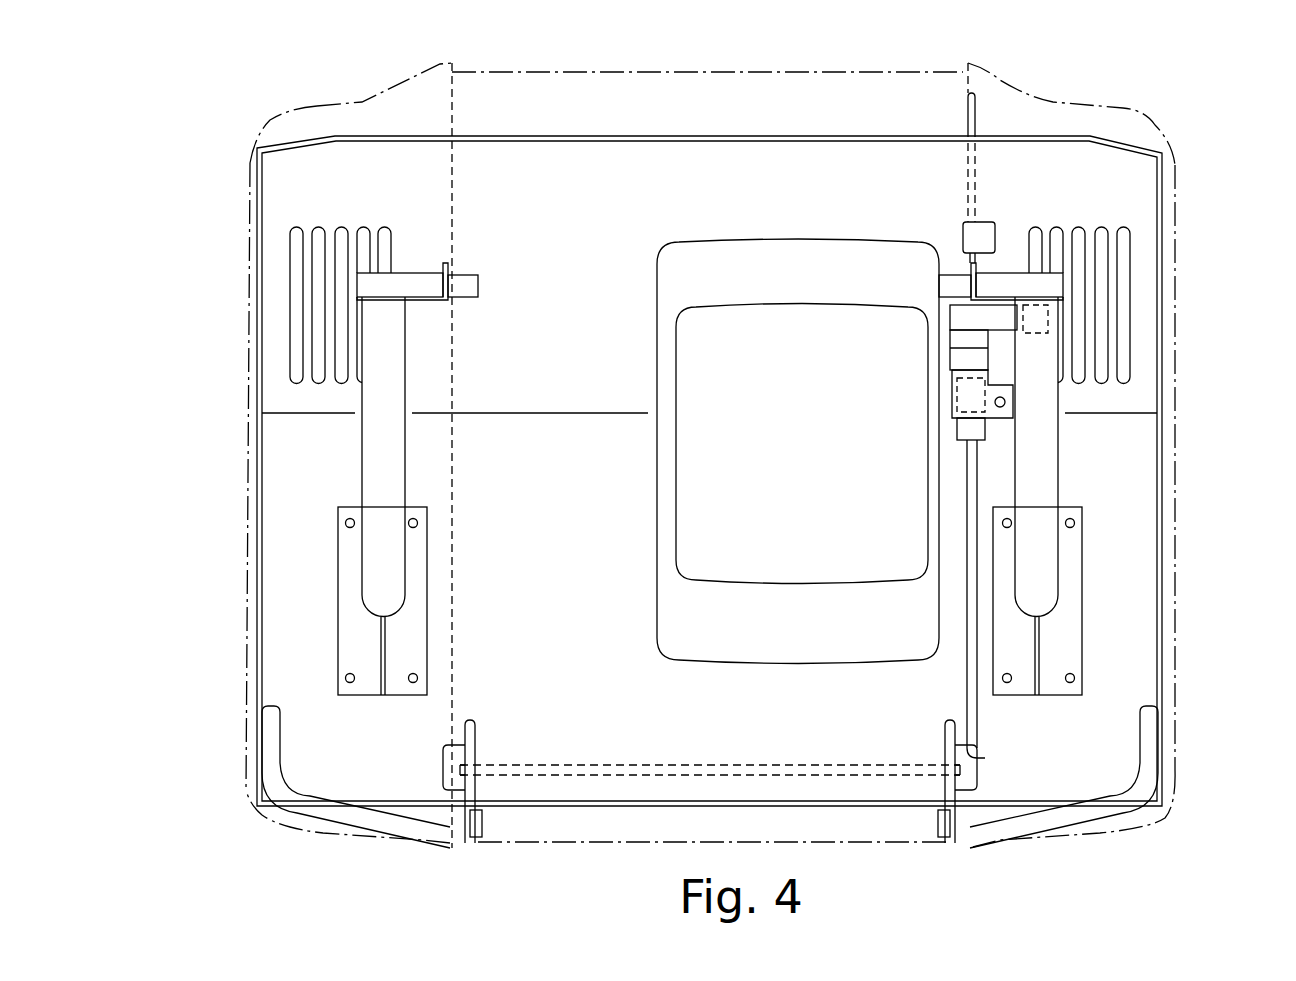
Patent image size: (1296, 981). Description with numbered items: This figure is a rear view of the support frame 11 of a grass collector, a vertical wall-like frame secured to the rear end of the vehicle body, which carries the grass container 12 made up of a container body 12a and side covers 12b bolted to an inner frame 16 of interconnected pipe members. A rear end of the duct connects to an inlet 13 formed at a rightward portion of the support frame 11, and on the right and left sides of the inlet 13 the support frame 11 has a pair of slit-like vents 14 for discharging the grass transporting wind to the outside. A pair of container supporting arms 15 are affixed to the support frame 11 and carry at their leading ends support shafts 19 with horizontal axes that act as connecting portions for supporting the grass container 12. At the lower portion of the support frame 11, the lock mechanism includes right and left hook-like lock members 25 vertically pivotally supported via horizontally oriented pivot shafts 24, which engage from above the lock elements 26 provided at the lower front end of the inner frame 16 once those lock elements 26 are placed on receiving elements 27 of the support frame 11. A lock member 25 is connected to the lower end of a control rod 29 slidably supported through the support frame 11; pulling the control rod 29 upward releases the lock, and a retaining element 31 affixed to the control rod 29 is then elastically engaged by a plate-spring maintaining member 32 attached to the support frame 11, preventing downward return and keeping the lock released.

The support frame 11 is at (295, 138).
The grass container 12 is at (1178, 148).
The container body 12a is at (655, 70).
The side covers 12b is at (240, 340).
The inlet 13 is at (797, 335).
The slit-like vents 14 is at (363, 235).
The container supporting arms 15 is at (370, 470).
The inner frame 16 is at (285, 740).
The support shafts 19 is at (465, 278).
The pivot shafts 24 is at (677, 765).
The lock members 25 is at (470, 793).
The lock elements 26 is at (412, 812).
The receiving elements 27 is at (467, 840).
The control rod 29 is at (975, 110).
The retaining element 31 is at (965, 430).
The maintaining member 32 is at (955, 322).